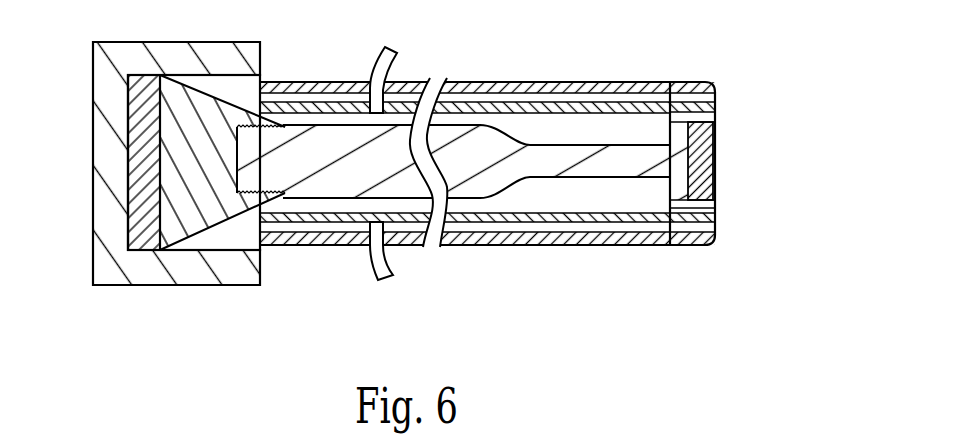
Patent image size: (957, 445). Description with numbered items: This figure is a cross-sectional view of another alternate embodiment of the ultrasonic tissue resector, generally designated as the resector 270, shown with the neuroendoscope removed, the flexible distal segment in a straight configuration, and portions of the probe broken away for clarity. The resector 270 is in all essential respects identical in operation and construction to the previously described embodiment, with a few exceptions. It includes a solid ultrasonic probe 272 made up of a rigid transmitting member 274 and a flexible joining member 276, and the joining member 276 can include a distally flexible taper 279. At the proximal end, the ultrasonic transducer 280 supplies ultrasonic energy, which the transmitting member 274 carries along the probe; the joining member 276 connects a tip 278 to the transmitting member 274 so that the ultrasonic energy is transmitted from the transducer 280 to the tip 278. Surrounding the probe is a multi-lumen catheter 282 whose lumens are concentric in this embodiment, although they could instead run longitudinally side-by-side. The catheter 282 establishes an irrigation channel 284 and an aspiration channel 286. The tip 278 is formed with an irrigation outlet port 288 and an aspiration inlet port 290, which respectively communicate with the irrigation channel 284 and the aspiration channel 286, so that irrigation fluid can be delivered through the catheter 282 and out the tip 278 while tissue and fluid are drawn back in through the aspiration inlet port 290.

The resector 270 is at (421, 185).
The solid ultrasonic probe 272 is at (332, 150).
The rigid transmitting member 274 is at (478, 142).
The flexible joining member 276 is at (601, 152).
The tip 278 is at (712, 83).
The distally flexible taper 279 is at (498, 137).
The ultrasonic transducer 280 is at (135, 192).
The multi-lumen catheter 282 is at (620, 245).
The irrigation channel 284 is at (632, 98).
The aspiration channel 286 is at (518, 192).
The irrigation outlet port 288 is at (710, 227).
The aspiration inlet port 290 is at (710, 117).